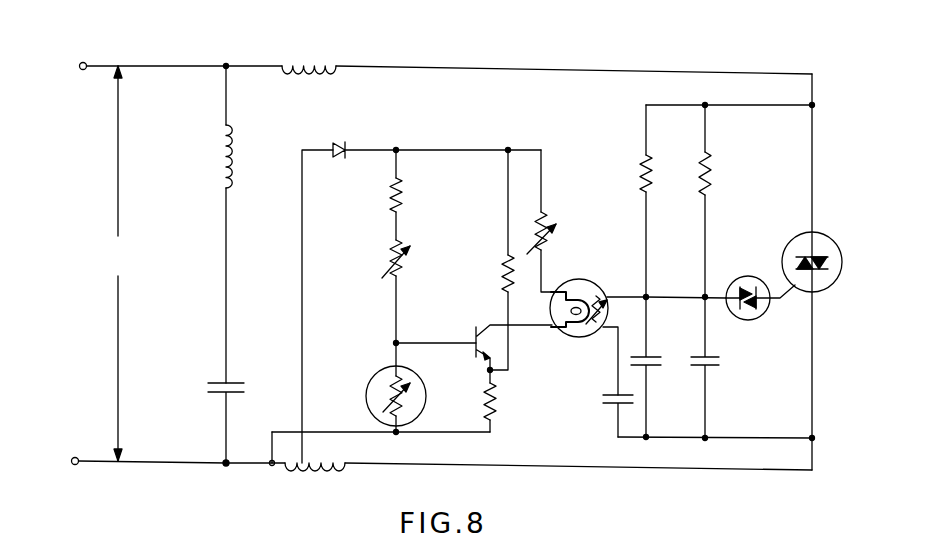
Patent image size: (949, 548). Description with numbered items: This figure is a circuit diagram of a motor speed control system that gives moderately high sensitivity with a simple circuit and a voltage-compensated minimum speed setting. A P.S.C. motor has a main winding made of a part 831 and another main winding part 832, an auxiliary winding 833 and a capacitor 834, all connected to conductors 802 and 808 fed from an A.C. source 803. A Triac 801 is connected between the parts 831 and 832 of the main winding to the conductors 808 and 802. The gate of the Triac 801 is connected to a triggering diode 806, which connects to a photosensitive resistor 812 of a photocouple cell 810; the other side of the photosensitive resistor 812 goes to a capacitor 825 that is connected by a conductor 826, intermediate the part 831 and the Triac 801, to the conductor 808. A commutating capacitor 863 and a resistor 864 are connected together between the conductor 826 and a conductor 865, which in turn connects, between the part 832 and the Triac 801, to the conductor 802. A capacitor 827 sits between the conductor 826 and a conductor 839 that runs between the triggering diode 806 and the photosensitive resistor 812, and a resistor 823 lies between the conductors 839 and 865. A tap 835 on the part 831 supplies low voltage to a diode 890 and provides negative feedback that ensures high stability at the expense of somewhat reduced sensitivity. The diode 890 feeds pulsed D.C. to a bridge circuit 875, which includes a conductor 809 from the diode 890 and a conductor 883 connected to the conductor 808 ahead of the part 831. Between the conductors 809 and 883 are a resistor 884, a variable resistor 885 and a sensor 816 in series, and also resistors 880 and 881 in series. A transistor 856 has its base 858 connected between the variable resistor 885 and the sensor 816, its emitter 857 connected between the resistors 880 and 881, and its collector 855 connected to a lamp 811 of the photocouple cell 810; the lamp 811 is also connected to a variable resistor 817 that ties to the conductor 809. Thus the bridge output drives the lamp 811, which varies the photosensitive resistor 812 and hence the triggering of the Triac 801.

The Triac 801 is at (829, 244).
The conductor 802 is at (158, 66).
The A.C. source 803 is at (107, 270).
The triggering diode 806 is at (750, 275).
The conductor 808 is at (144, 465).
The conductor 809 is at (482, 150).
The photocouple cell 810 is at (584, 280).
The lamp 811 is at (580, 338).
The photosensitive resistor 812 is at (596, 300).
The sensor 816 is at (376, 378).
The variable resistor 817 is at (546, 218).
The resistor 823 is at (643, 172).
The capacitor 825 is at (606, 405).
The conductor 826 is at (740, 438).
The capacitor 827 is at (650, 356).
The part of main winding 831 is at (310, 474).
The main winding part 832 is at (310, 66).
The auxiliary winding 833 is at (222, 150).
The capacitor 834 is at (210, 382).
The tap 835 is at (313, 460).
The conductor 839 is at (661, 297).
The collector 855 is at (511, 350).
The transistor 856 is at (490, 312).
The emitter 857 is at (488, 362).
The base 858 is at (473, 348).
The commutating capacitor 863 is at (712, 366).
The resistor 864 is at (711, 191).
The conductor 865 is at (730, 105).
The bridge circuit 875 is at (433, 150).
The resistor 880 is at (505, 278).
The resistor 881 is at (496, 416).
The conductor 883 is at (323, 432).
The resistor 884 is at (393, 200).
The variable resistor 885 is at (401, 246).
The diode 890 is at (339, 148).